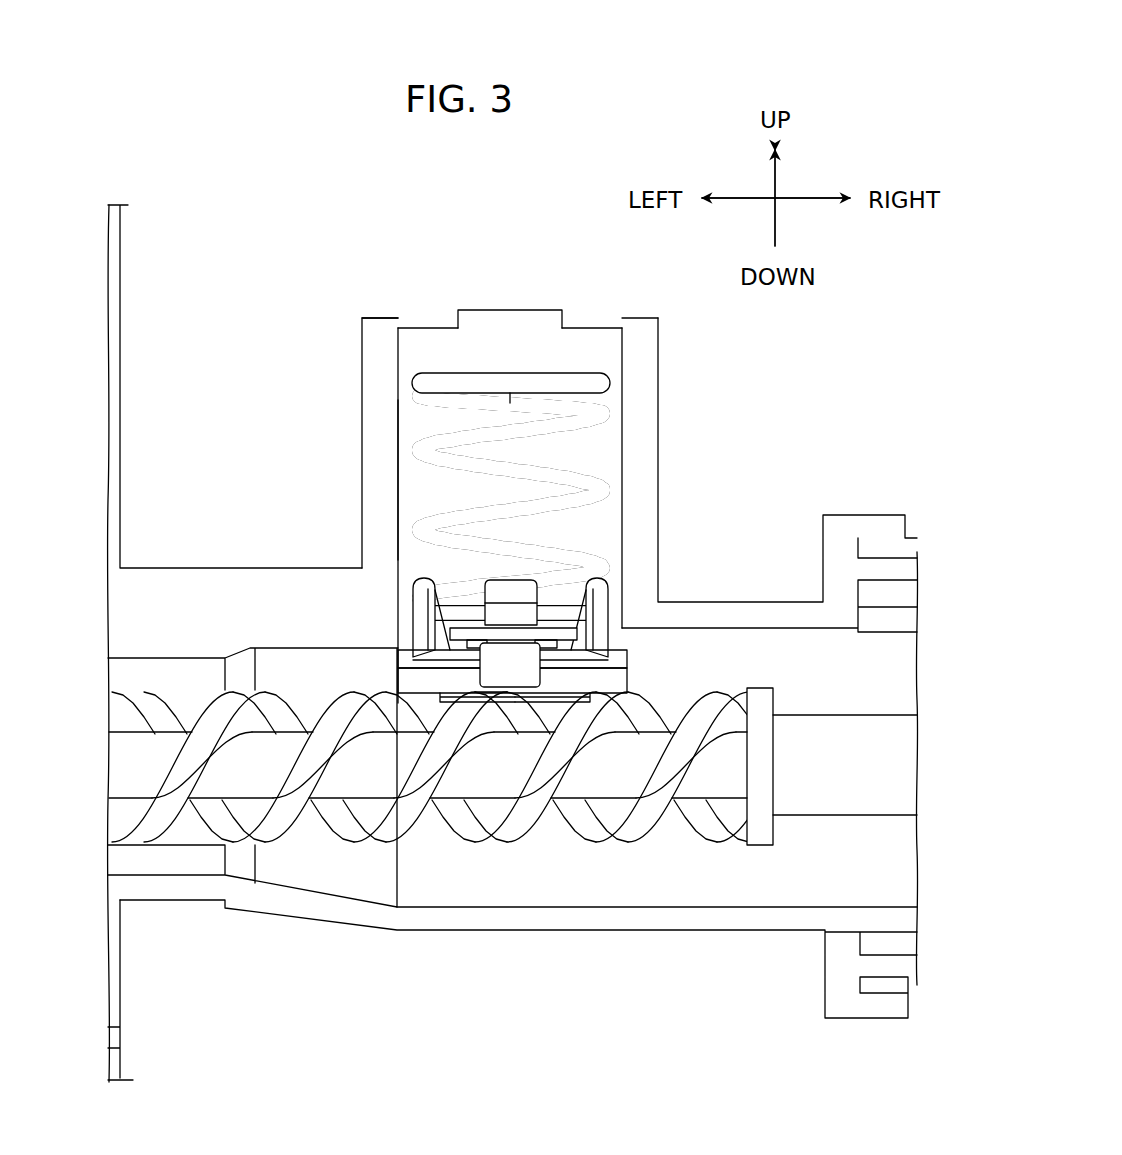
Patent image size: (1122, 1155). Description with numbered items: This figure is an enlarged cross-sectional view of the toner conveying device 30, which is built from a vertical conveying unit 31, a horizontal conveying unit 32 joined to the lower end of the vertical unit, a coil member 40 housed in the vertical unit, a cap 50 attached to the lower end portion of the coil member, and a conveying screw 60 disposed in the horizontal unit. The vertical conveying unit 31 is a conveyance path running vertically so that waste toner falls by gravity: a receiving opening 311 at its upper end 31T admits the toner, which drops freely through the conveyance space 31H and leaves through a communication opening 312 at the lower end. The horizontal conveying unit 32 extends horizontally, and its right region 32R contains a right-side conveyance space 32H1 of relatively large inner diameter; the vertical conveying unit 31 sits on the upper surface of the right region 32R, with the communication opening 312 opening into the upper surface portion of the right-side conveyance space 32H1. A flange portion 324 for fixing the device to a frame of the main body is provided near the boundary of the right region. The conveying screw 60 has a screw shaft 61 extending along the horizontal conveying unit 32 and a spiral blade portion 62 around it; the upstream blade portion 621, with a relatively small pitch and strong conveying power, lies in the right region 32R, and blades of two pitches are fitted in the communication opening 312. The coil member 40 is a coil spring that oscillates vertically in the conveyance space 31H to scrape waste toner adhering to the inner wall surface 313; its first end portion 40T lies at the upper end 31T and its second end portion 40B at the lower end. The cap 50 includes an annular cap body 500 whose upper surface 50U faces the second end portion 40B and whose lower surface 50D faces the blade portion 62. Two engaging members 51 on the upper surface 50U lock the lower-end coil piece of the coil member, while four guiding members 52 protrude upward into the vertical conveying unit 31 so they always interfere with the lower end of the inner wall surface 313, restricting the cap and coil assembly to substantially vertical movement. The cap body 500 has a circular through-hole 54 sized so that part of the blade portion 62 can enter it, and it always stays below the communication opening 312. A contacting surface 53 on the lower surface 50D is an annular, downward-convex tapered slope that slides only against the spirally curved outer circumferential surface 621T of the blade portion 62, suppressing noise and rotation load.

The toner conveying device 30 is at (300, 250).
The vertical conveying unit 31 is at (509, 480).
The upper end 31T is at (382, 318).
The receiving opening 311 is at (427, 328).
The conveyance space 31H is at (487, 350).
The communication opening 312 is at (612, 612).
The inner wall surface 313 is at (407, 575).
The flange portion 324 is at (119, 343).
The horizontal conveying unit 32 is at (513, 643).
The right region 32R is at (657, 925).
The right-side conveyance space 32H1 is at (705, 873).
The coil member 40 is at (580, 441).
The first end portion 40T is at (560, 375).
The second end portion 40B is at (548, 625).
The cap 50 is at (532, 675).
The upper surface 50U is at (628, 652).
The lower surface 50D is at (628, 690).
The cap body 500 is at (398, 658).
The engaging member 51 is at (510, 590).
The guiding member 52 is at (420, 595).
The contacting surface 53 is at (437, 688).
The through-hole 54 is at (583, 705).
The conveying screw 60 is at (489, 841).
The screw shaft 61 is at (338, 785).
The blade portion 62 is at (491, 841).
The upstream blade portion 621 is at (450, 840).
The outer circumferential surface 621T is at (460, 703).